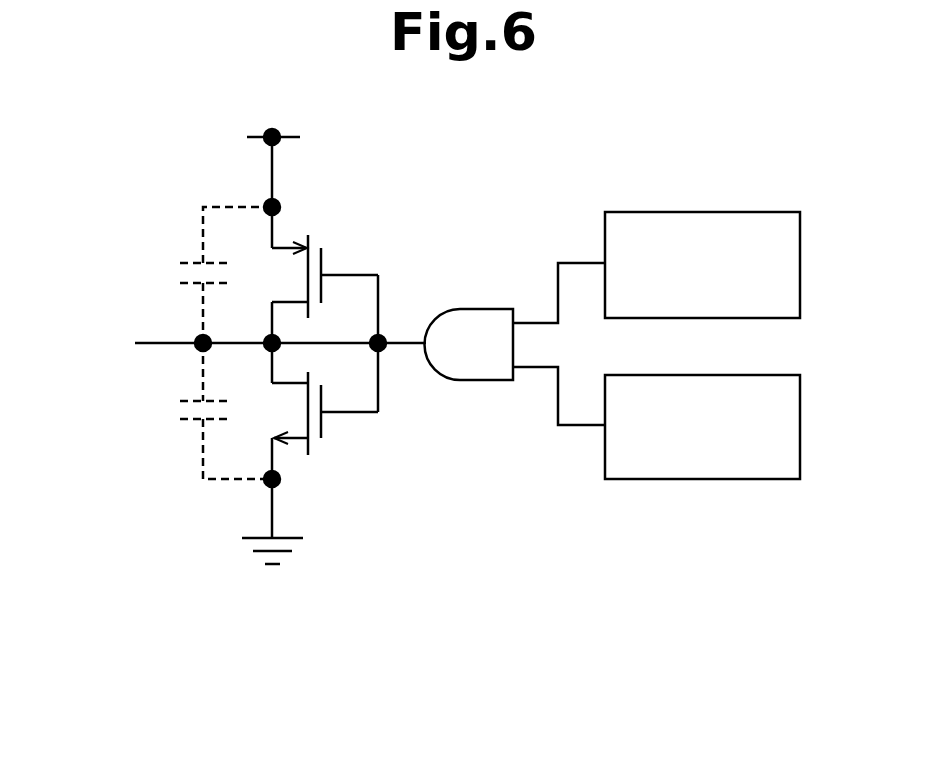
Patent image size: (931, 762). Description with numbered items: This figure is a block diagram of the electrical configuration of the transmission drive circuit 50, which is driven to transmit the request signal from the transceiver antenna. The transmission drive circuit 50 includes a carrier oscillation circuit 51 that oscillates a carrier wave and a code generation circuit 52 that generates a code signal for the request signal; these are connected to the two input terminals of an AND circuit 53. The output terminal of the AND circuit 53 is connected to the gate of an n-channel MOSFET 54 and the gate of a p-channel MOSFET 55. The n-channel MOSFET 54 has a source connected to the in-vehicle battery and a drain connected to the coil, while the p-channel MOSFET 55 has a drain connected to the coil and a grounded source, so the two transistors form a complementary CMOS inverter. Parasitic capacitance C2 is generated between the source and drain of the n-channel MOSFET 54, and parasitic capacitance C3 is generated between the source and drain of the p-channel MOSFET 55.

The transmission drive circuit 50 is at (523, 172).
The carrier oscillation circuit 51 is at (698, 212).
The code generation circuit 52 is at (700, 479).
The AND circuit 53 is at (468, 380).
The n-channel MOSFET 54 is at (323, 259).
The p-channel MOSFET 55 is at (323, 428).
The parasitic capacitance C2 is at (203, 233).
The parasitic capacitance C3 is at (203, 447).